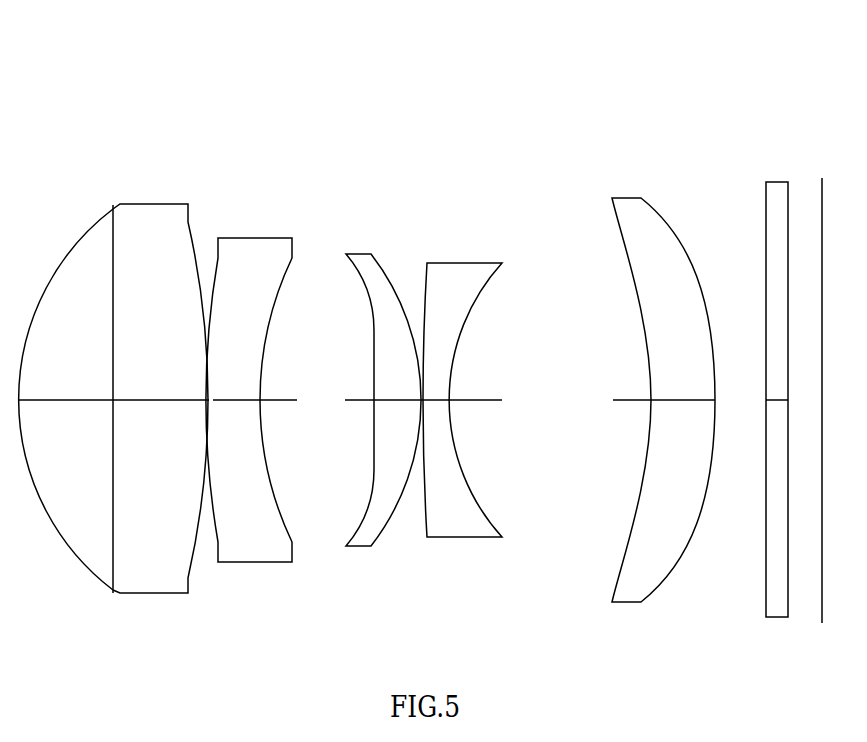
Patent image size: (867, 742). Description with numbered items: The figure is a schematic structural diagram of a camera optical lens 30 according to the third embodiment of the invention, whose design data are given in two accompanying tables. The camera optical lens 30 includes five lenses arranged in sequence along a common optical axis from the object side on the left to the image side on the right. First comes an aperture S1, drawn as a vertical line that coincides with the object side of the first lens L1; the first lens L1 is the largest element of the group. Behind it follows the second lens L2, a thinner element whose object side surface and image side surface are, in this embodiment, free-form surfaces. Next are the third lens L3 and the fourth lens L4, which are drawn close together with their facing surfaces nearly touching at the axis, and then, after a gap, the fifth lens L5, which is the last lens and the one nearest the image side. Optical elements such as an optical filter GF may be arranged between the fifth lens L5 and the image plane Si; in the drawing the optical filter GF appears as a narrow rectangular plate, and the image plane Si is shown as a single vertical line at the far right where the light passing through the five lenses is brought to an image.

The camera optical lens 30 is at (460, 60).
The aperture S1 is at (111, 386).
The first lens L1 is at (113, 386).
The second lens L2 is at (249, 386).
The third lens L3 is at (382, 387).
The fourth lens L4 is at (462, 387).
The fifth lens L5 is at (663, 387).
The optical filter GF is at (775, 386).
The image plane Si is at (820, 388).